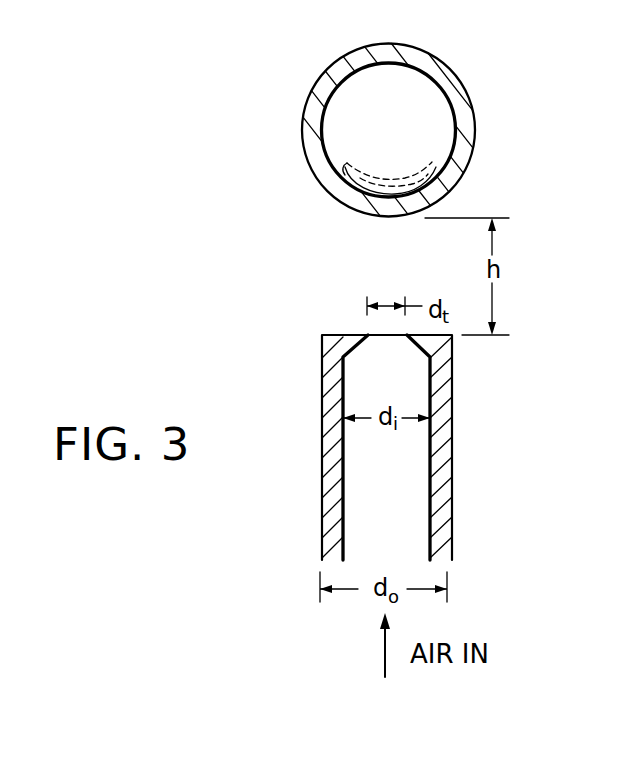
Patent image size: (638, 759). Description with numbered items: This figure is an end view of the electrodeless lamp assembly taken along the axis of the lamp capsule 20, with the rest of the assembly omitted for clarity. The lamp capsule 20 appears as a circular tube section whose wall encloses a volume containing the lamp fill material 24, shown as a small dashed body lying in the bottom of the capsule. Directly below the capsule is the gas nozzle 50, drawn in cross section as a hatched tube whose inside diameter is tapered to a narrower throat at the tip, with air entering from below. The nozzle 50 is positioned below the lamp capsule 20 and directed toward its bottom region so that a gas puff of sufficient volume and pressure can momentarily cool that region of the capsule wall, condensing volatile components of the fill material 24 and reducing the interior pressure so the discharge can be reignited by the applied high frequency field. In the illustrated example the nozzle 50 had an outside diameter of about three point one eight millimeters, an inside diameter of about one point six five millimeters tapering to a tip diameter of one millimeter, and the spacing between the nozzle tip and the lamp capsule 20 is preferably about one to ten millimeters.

The lamp capsule 20 is at (313, 92).
The lamp fill material 24 is at (397, 173).
The gas nozzle 50 is at (452, 458).